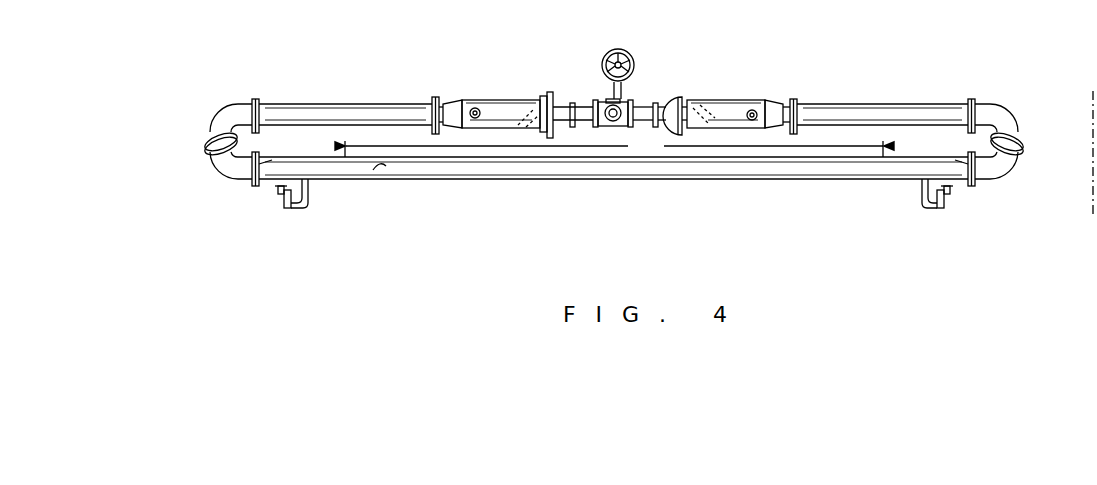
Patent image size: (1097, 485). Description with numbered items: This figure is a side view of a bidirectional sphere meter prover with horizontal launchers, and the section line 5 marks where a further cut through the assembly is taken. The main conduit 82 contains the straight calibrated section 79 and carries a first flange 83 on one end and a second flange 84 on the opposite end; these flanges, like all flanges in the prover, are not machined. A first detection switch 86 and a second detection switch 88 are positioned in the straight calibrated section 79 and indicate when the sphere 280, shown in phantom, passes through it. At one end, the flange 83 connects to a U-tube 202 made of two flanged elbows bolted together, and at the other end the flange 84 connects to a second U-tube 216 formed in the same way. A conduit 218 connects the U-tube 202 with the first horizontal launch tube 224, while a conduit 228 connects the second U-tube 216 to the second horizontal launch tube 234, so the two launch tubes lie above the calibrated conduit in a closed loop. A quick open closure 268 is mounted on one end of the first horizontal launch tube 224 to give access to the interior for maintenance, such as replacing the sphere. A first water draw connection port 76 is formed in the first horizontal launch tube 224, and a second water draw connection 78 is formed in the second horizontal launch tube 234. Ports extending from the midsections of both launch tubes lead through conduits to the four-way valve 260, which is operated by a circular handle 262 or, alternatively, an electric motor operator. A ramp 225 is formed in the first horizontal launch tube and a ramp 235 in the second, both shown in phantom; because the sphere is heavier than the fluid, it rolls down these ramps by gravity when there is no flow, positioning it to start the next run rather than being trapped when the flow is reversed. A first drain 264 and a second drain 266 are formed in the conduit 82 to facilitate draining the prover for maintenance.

The U-tube 202 is at (1016, 105).
The second U-tube 216 is at (180, 157).
The conduit 218 is at (867, 105).
The conduit 228 is at (337, 103).
The first horizontal launch tube 224 is at (727, 98).
The second horizontal launch tube 234 is at (513, 98).
The ramp 225 is at (702, 124).
The ramp 235 is at (523, 125).
The 4-way valve 260 is at (613, 126).
The circular handle 262 is at (631, 55).
The quick open closure 268 is at (668, 97).
The first water draw connection port 76 is at (778, 105).
The second water draw connection 78 is at (458, 102).
The straight calibrated section 79 is at (614, 144).
The conduit 82 is at (483, 180).
The first flange 83 is at (908, 165).
The second flange 84 is at (262, 163).
The first detection switch 86 is at (883, 150).
The second detection switch 88 is at (345, 148).
The sphere 280 is at (380, 169).
The first drain 264 is at (924, 209).
The second drain 266 is at (303, 209).
The section line 5- 5 is at (1093, 91).